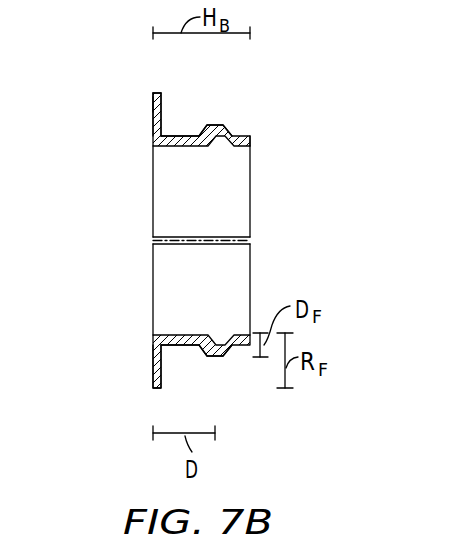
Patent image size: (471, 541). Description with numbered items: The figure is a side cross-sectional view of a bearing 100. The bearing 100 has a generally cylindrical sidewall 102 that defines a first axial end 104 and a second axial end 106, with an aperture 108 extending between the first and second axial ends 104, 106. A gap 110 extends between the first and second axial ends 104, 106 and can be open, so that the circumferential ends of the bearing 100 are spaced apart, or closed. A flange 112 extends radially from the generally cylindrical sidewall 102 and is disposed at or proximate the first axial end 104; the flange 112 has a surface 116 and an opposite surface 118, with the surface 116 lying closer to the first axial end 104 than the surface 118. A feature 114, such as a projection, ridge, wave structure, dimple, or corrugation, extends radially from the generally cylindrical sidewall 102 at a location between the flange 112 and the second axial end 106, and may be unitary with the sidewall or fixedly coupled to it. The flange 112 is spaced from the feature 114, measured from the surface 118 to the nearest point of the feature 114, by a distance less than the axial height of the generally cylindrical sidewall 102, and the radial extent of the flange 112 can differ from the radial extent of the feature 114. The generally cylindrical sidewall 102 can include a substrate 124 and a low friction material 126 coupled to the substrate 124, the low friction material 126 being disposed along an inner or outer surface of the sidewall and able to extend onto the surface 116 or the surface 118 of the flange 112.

The bearing 100 is at (104, 67).
The generally cylindrical sidewall 102 is at (181, 135).
The first axial end 104 is at (153, 117).
The second axial end 106 is at (250, 140).
The aperture 108 is at (146, 238).
The gap 110 is at (250, 236).
The flange 112 is at (157, 93).
The feature 114 is at (222, 127).
The surface 116 is at (153, 105).
The surface 118 is at (161, 100).
The substrate 124 is at (183, 346).
The low friction material 126 is at (152, 365).